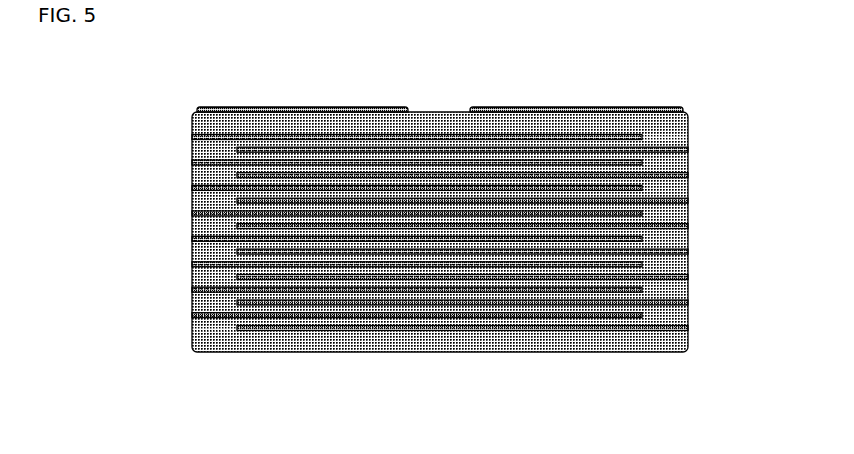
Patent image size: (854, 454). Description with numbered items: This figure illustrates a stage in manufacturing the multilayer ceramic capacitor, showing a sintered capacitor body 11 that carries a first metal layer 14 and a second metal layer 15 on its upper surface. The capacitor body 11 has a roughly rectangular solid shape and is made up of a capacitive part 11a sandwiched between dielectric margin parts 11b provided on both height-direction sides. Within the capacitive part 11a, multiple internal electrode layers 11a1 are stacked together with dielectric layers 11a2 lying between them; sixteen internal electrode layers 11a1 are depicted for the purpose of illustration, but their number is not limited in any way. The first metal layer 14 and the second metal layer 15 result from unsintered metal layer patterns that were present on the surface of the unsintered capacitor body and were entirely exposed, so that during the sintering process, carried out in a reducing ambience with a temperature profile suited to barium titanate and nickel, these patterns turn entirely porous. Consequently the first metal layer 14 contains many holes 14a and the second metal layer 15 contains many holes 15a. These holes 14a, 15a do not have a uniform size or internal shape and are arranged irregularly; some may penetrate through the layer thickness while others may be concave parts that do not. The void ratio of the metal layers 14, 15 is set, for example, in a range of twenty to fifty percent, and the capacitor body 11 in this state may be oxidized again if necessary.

The capacitor body 11 is at (437, 112).
The capacitive part 11a is at (407, 276).
The internal electrode layers 11a1 is at (355, 331).
The dielectric layers 11a2 is at (408, 322).
The dielectric margin parts 11b is at (188, 113).
The first metal layer 14 is at (372, 107).
The holes 14a is at (330, 107).
The second metal layer 15 is at (508, 107).
The holes 15a is at (555, 107).